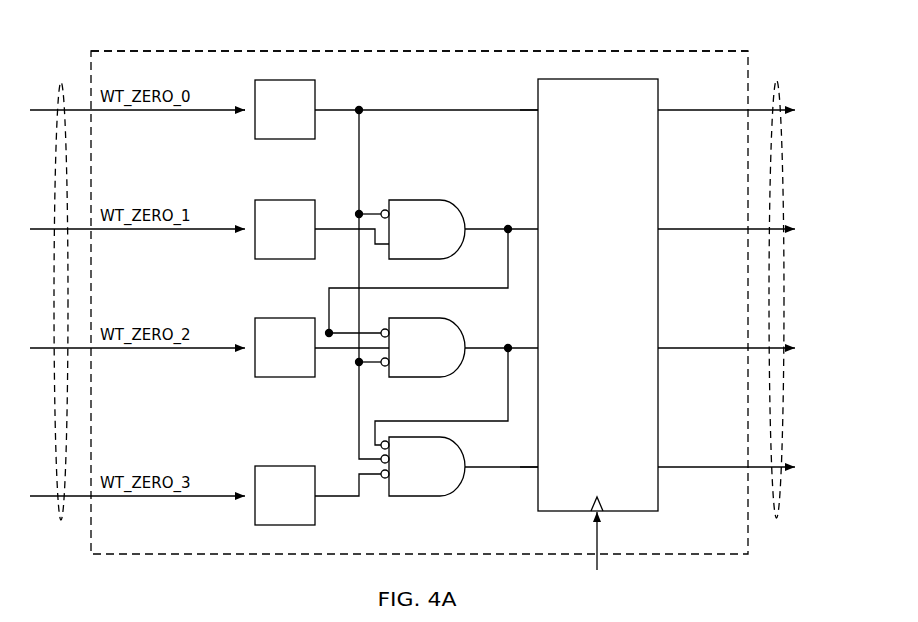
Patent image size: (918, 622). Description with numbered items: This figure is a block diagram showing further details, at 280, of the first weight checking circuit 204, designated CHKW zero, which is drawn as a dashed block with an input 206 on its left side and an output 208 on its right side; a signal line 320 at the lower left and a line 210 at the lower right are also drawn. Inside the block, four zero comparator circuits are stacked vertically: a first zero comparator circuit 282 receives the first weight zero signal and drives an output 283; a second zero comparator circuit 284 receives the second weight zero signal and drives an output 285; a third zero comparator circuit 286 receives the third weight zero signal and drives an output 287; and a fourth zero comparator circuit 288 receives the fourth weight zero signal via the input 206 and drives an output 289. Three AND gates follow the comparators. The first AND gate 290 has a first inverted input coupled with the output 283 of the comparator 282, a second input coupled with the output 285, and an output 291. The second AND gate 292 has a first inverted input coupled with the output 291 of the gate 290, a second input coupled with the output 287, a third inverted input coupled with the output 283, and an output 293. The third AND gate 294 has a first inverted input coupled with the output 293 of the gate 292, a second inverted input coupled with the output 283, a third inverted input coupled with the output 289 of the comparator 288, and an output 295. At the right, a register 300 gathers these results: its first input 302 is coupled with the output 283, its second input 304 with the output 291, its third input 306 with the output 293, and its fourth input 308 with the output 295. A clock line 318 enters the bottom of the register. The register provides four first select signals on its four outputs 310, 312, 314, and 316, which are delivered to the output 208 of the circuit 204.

The first weight checking circuit 280 is at (89, 36).
The first weight checking circuit 204 is at (718, 51).
The input of the circuit 206 is at (58, 527).
The output of the circuit 208 is at (773, 525).
The select output signal line 210 is at (733, 621).
The input signal line 320 is at (137, 366).
The first zero comparator circuit 282 is at (284, 80).
The output of first zero comparator circuit 283 is at (318, 108).
The second zero comparator circuit 284 is at (260, 200).
The output of second zero comparator circuit 285 is at (316, 222).
The third zero comparator circuit 286 is at (260, 318).
The output of third zero comparator circuit 287 is at (316, 354).
The fourth zero comparator circuit 288 is at (260, 466).
The output of fourth zero comparator circuit 289 is at (316, 500).
The first AND gate 290 is at (426, 199).
The output of first AND gate 291 is at (463, 238).
The second AND gate 292 is at (426, 378).
The output of second AND gate 293 is at (463, 356).
The third AND gate 294 is at (436, 497).
The output of third AND gate 295 is at (463, 474).
The register 300 is at (613, 304).
The first input of register 302 is at (538, 109).
The second input of register 304 is at (538, 228).
The third input of register 306 is at (538, 347).
The fourth input of register 308 is at (538, 466).
The register output 310 is at (659, 112).
The register output 312 is at (659, 231).
The register output 314 is at (659, 350).
The register output 316 is at (659, 469).
The register clock input 318 is at (594, 513).